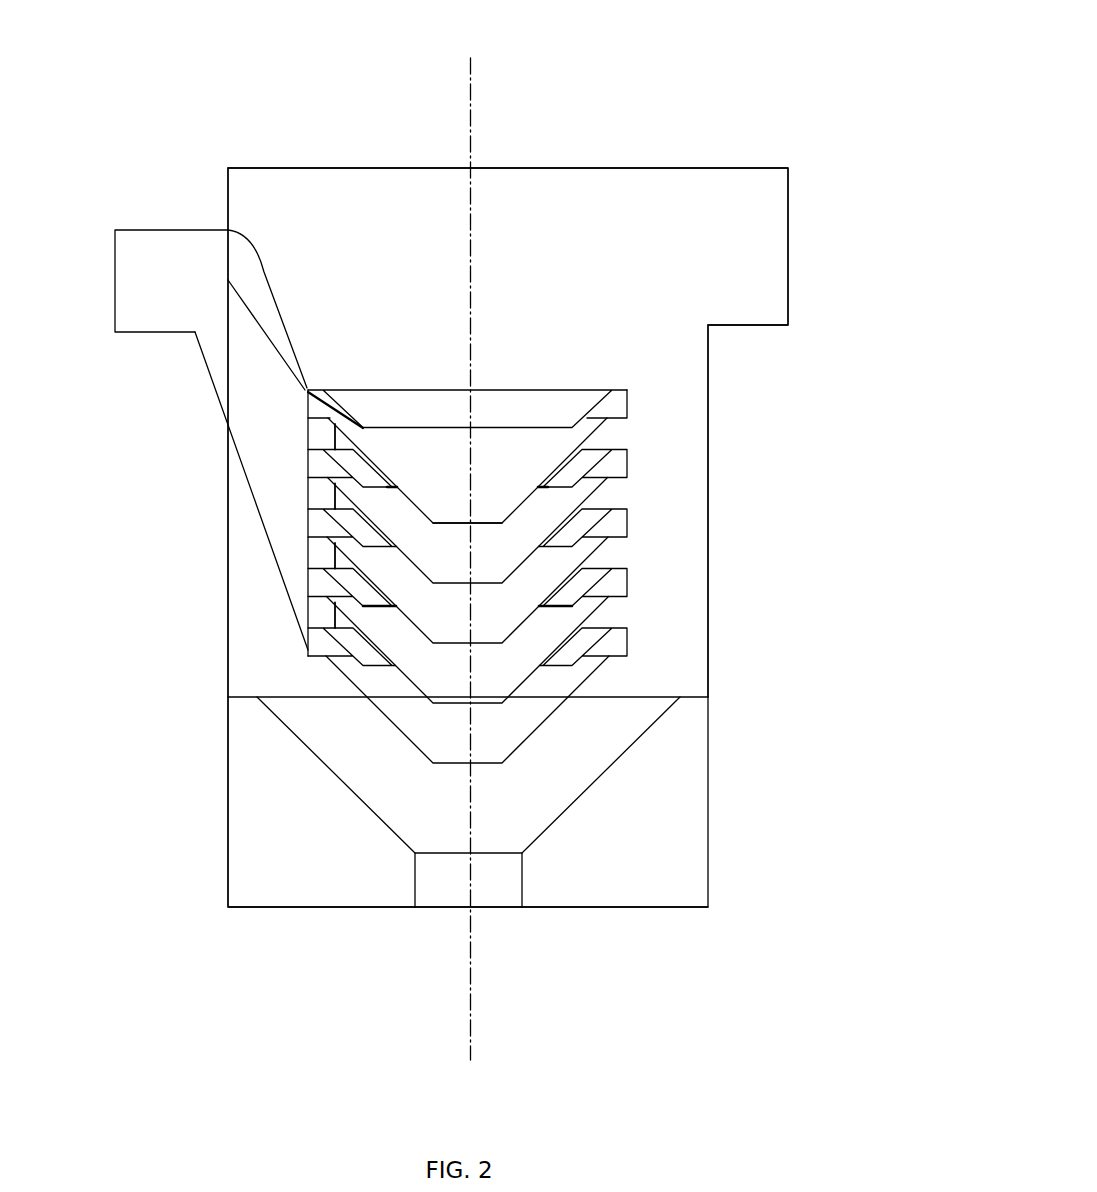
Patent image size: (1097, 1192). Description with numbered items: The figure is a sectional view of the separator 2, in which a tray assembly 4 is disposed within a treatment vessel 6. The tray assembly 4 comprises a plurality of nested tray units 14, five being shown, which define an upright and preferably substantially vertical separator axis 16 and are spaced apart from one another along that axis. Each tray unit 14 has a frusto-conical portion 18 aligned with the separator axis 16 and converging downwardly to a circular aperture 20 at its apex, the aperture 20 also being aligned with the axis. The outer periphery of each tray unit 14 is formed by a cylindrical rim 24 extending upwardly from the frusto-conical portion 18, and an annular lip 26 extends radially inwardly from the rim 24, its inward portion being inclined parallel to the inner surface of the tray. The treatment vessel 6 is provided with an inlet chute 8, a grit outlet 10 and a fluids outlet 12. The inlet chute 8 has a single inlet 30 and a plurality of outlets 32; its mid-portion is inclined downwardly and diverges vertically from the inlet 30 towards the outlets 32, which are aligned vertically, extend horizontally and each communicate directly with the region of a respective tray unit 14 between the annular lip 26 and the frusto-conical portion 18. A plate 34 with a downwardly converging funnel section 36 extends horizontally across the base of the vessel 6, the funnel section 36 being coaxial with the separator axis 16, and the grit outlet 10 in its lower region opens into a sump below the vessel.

The separator 2 is at (252, 130).
The tray assembly 4 is at (644, 509).
The treatment vessel 6 is at (228, 600).
The inlet chute 8 is at (265, 412).
The grit outlet 10 is at (490, 895).
The fluids outlet 12 is at (756, 230).
The tray unit 14 is at (456, 434).
The separator axis 16 is at (470, 112).
The frusto-conical portion 18 is at (400, 493).
The circular aperture 20 is at (490, 528).
The cylindrical rim 24 is at (627, 403).
The annular lip 26 is at (593, 407).
The inlet 30 is at (137, 287).
The outlets 32 is at (317, 456).
The plate 34 is at (693, 697).
The funnel section 36 is at (327, 767).